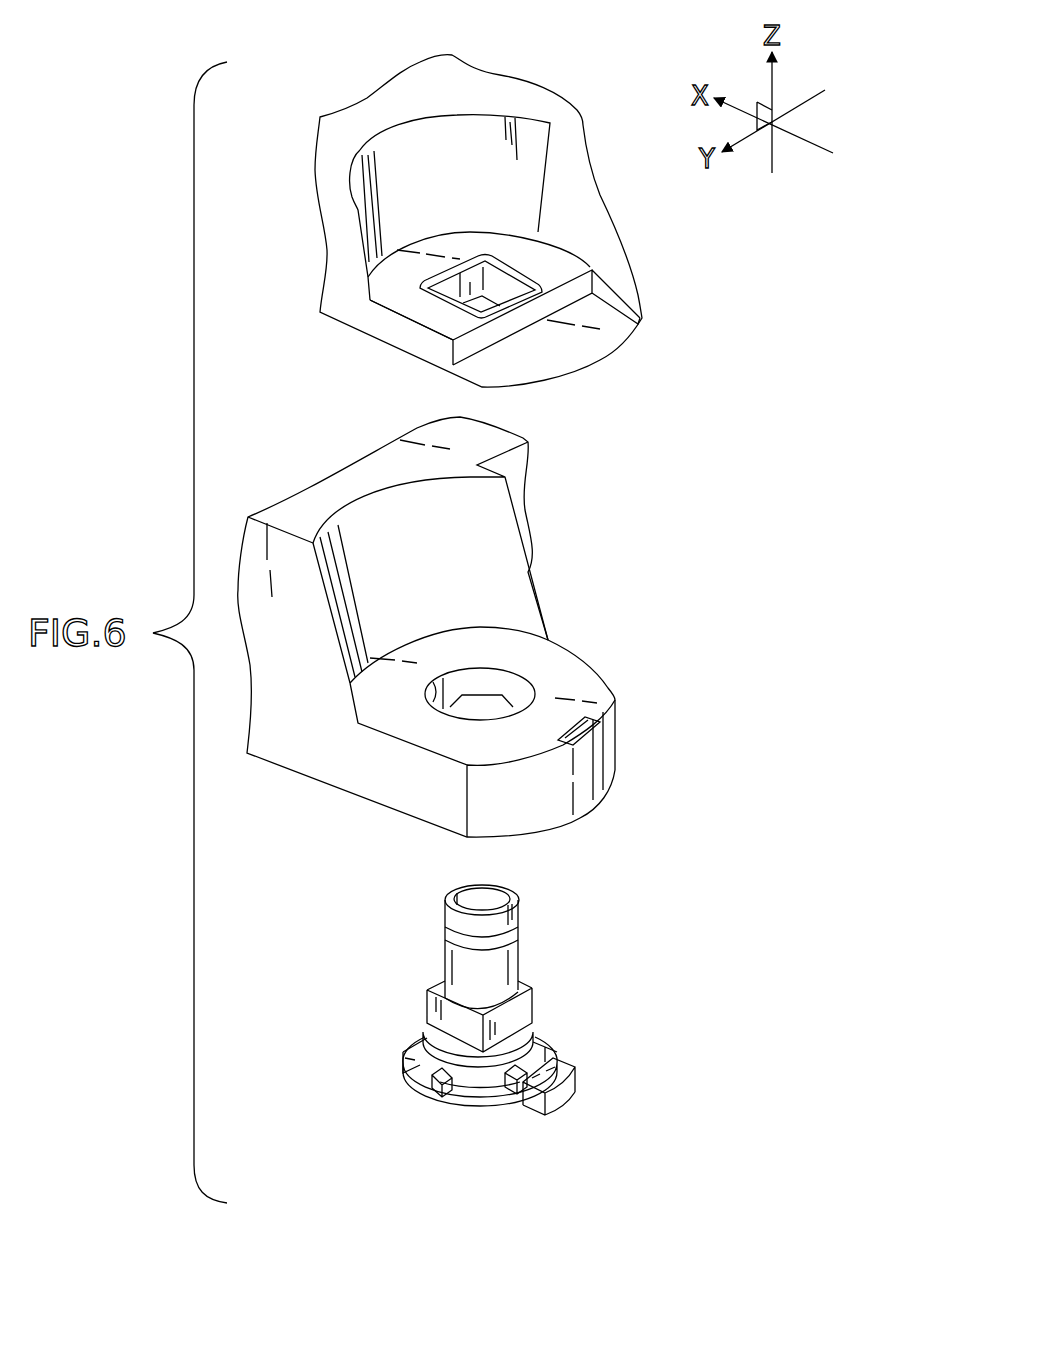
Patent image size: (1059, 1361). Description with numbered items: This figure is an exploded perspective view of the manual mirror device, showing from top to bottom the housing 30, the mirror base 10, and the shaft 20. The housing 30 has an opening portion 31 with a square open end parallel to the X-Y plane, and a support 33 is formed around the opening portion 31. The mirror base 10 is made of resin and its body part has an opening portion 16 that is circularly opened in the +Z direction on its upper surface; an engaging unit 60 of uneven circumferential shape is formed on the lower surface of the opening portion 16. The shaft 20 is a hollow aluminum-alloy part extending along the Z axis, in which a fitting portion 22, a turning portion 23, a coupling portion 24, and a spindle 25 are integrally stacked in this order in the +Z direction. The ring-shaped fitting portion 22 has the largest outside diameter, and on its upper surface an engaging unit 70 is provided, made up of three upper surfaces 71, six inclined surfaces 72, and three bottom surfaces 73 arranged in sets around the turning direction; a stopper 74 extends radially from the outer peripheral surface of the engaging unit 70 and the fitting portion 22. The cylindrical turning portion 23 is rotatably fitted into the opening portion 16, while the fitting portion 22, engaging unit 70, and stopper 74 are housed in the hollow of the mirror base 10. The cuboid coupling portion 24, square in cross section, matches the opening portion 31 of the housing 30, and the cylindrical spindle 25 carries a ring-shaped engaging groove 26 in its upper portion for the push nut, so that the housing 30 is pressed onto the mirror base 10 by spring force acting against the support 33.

The mirror base 10 is at (626, 752).
The opening portion 16 is at (430, 688).
The shaft 20 is at (479, 1048).
The fitting portion 22 is at (550, 1052).
The turning portion 23 is at (425, 1046).
The coupling portion 24 is at (430, 1003).
The spindle 25 is at (450, 963).
The engaging groove 26 is at (515, 933).
The housing 30 is at (600, 186).
The opening portion 31 is at (500, 287).
The support 33 is at (447, 303).
The engaging unit 60 is at (505, 701).
The engaging unit 70 is at (486, 1132).
The upper surfaces 71 is at (405, 1078).
The inclined surfaces 72 is at (445, 1100).
The bottom surfaces 73 is at (477, 1092).
The stopper 74 is at (561, 1111).